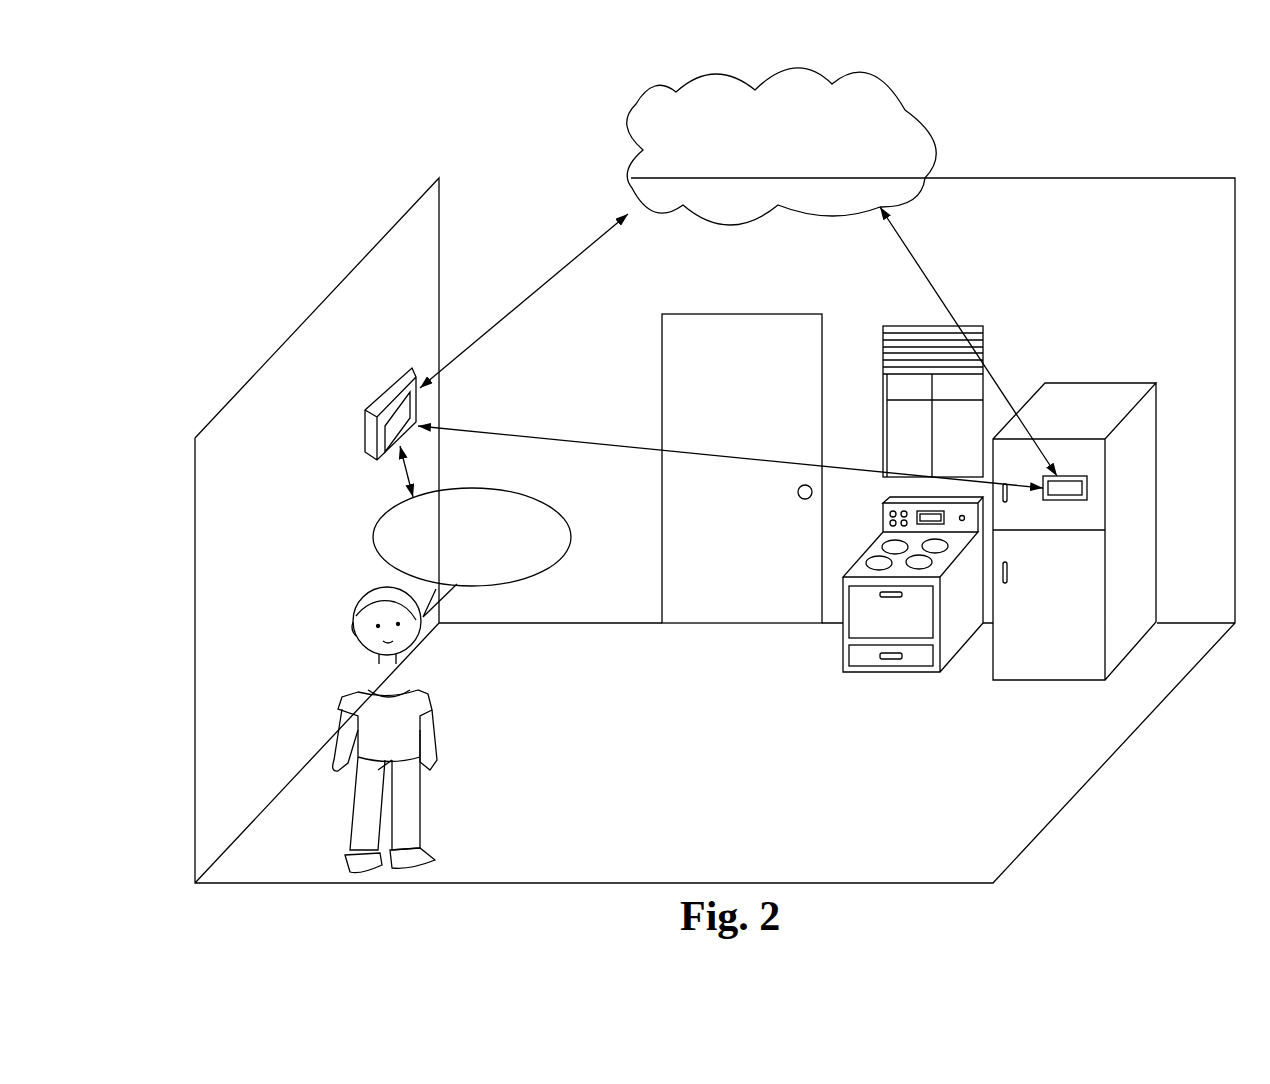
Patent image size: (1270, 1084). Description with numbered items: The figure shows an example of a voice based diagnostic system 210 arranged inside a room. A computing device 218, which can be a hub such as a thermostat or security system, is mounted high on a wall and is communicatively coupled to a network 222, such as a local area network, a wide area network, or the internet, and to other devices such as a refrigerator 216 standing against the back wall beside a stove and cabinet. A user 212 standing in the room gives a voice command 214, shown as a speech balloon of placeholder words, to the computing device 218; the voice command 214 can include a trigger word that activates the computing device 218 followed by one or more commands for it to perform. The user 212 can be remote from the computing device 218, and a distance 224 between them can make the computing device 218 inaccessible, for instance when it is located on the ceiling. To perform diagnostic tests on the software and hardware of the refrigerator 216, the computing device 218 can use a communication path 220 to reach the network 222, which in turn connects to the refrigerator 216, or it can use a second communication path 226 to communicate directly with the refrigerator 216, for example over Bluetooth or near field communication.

The voice based diagnostic system 210 is at (229, 253).
The user 212 is at (352, 612).
The voice command 214 is at (378, 531).
The refrigerator 216 is at (1098, 383).
The computing device 218 is at (372, 404).
The communication path 220 is at (516, 309).
The network 222 is at (936, 152).
The distance 224 is at (412, 488).
The communication path 226 is at (588, 444).